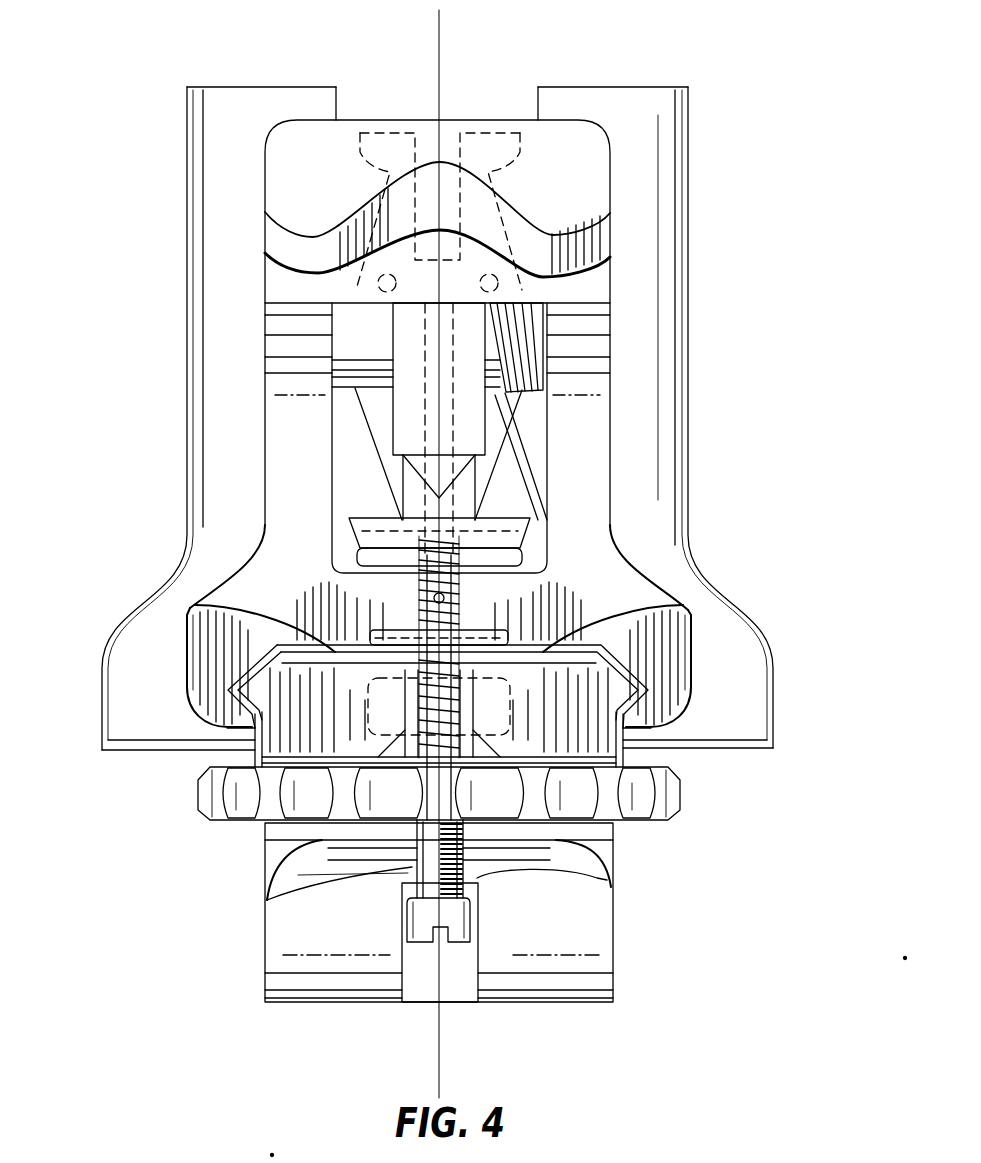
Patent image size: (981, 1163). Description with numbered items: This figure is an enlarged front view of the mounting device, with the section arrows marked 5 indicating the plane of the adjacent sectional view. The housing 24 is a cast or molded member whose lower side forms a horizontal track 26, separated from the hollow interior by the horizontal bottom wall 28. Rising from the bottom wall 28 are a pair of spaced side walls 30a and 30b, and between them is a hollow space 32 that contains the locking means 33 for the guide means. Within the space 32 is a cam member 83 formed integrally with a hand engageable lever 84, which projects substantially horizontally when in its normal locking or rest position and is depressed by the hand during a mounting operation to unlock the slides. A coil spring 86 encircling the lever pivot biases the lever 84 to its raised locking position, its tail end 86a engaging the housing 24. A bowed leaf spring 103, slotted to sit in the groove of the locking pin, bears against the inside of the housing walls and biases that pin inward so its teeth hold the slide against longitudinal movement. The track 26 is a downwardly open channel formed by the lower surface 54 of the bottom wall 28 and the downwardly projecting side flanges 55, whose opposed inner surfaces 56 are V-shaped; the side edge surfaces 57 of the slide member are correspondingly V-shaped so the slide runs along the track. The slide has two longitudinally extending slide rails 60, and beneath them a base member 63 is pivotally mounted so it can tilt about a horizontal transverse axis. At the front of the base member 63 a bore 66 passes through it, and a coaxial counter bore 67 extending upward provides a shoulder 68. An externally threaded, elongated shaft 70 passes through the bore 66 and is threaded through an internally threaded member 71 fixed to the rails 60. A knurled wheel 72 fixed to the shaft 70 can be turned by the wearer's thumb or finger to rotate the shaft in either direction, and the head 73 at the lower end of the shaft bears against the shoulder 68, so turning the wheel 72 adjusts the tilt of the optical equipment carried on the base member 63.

The section line 5- 5 is at (430, 30).
The housing 24 is at (728, 203).
The horizontal track 26 is at (623, 648).
The horizontal bottom wall 28 is at (365, 597).
The side wall 30a is at (263, 468).
The side wall 30b is at (611, 433).
The hollow space 32 is at (535, 428).
The locking means 33 is at (345, 443).
The lower surface 54 is at (205, 637).
The side flanges 55 is at (203, 604).
The inner surfaces 56 is at (252, 690).
The side edge surfaces 57 is at (228, 728).
The slide rails 60 is at (255, 688).
The base member 63 is at (308, 920).
The bore 66 is at (267, 900).
The counter bore 67 is at (478, 960).
The shoulder 68 is at (607, 878).
The threaded shaft 70 is at (460, 590).
The internally threaded member 71 is at (497, 630).
The knurled wheel 72 is at (672, 808).
The head 73 is at (420, 942).
The cam member 83 is at (400, 390).
The lever 84 is at (600, 172).
The coil spring 86 is at (533, 348).
The tail end 86a is at (530, 468).
The bowed leaf spring 103 is at (478, 133).